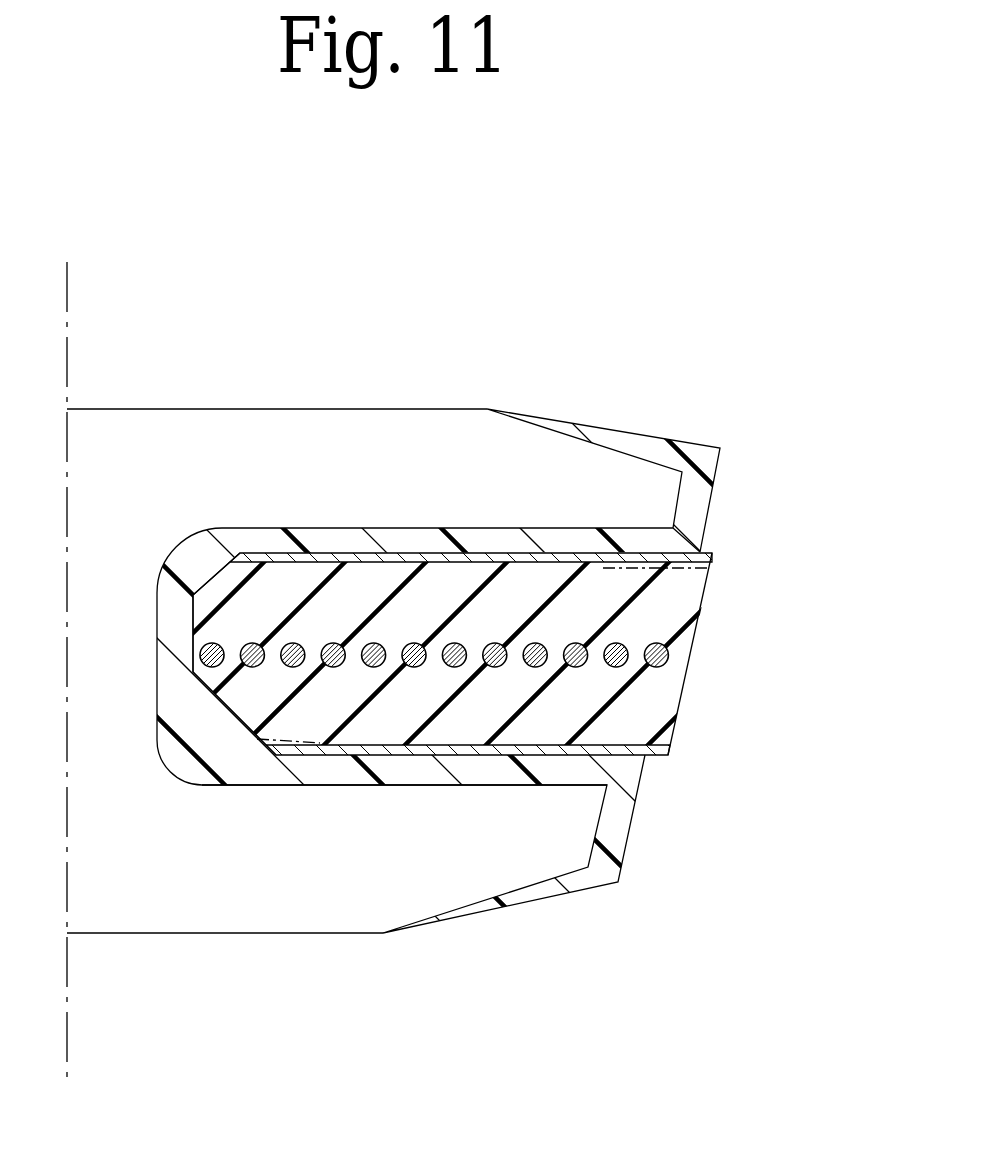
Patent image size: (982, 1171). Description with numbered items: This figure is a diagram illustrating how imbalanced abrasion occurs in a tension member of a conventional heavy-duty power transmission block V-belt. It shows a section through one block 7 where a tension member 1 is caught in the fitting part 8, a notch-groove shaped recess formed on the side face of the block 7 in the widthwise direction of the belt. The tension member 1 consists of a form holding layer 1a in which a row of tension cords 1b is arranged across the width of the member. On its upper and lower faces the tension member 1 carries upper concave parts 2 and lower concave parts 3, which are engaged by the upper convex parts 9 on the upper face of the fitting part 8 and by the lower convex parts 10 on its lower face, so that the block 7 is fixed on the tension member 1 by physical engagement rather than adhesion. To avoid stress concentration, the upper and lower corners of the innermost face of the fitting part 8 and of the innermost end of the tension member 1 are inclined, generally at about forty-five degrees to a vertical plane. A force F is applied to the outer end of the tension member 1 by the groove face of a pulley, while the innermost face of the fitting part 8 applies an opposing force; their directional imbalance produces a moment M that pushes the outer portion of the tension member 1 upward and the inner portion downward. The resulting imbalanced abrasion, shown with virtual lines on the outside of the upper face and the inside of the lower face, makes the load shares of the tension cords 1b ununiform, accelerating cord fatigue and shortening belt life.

The tension member 1 is at (459, 739).
The form holding layer 1a is at (702, 604).
The tension cords 1b is at (577, 672).
The upper concave parts 2 is at (392, 548).
The lower concave parts 3 is at (430, 787).
The block 7 is at (168, 393).
The fitting part 8 is at (396, 563).
The upper convex parts 9 is at (305, 555).
The lower convex parts 10 is at (370, 745).
The force F is at (803, 685).
The moment M is at (610, 573).